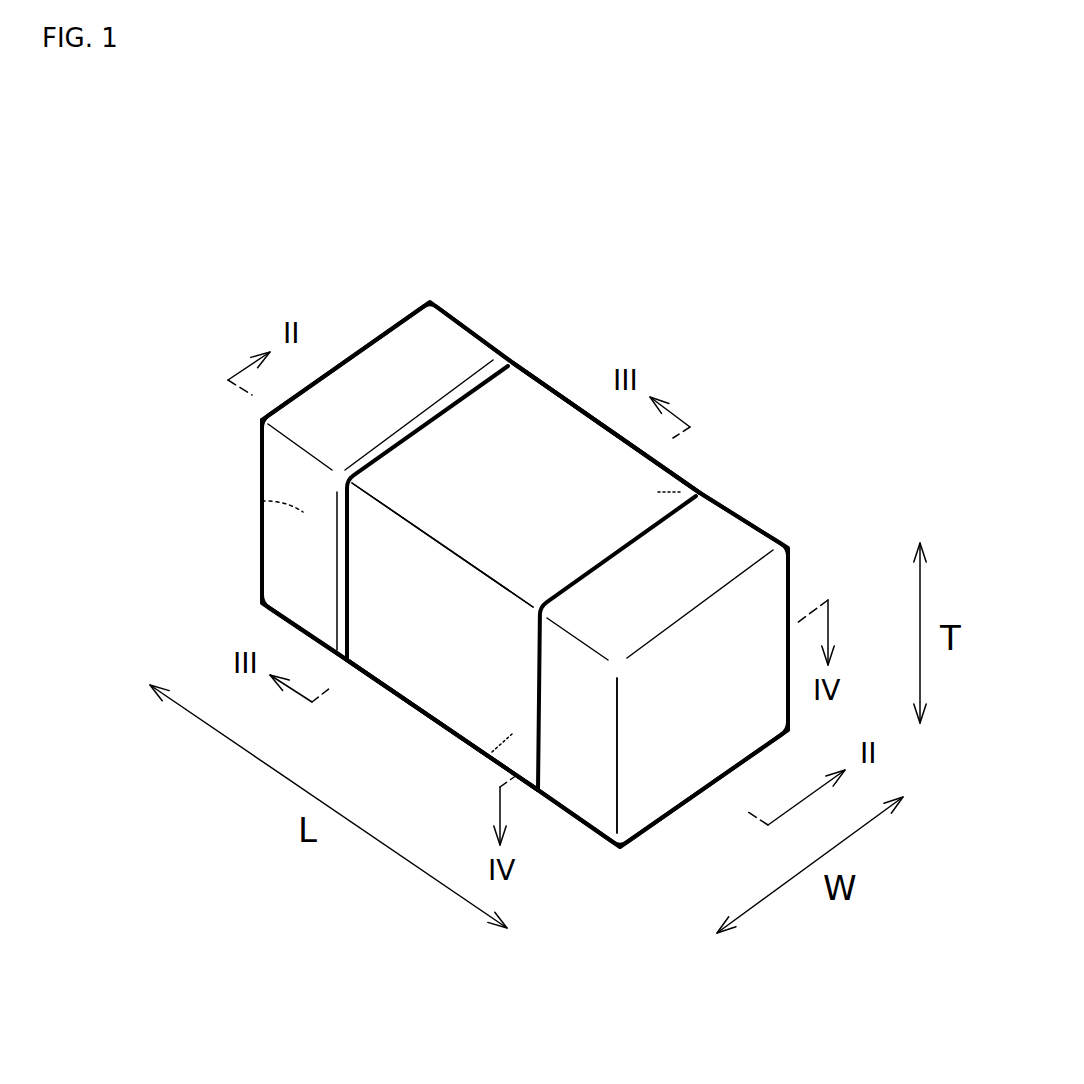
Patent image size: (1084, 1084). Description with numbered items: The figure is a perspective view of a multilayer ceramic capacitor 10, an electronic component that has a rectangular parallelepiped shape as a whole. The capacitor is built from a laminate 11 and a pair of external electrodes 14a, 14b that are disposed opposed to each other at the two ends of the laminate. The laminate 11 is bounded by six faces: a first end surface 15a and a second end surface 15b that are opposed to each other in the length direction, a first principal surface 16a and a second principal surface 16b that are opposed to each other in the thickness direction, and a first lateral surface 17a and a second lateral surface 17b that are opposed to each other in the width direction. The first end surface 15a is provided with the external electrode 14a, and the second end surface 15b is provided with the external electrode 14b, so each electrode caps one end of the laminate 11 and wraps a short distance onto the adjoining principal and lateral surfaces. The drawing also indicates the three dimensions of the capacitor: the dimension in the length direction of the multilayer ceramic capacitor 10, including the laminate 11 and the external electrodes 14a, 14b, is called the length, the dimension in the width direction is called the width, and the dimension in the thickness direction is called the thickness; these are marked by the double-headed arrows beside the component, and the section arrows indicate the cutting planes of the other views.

The multilayer ceramic capacitor 10 is at (502, 579).
The laminate 11 is at (545, 405).
The external electrode 14a is at (467, 340).
The external electrode 14b is at (737, 527).
The first end surface 15a is at (262, 501).
The second end surface 15b is at (647, 765).
The first principal surface 16a is at (640, 478).
The second principal surface 16b is at (490, 757).
The first lateral surface 17a is at (452, 677).
The second lateral surface 17b is at (693, 489).